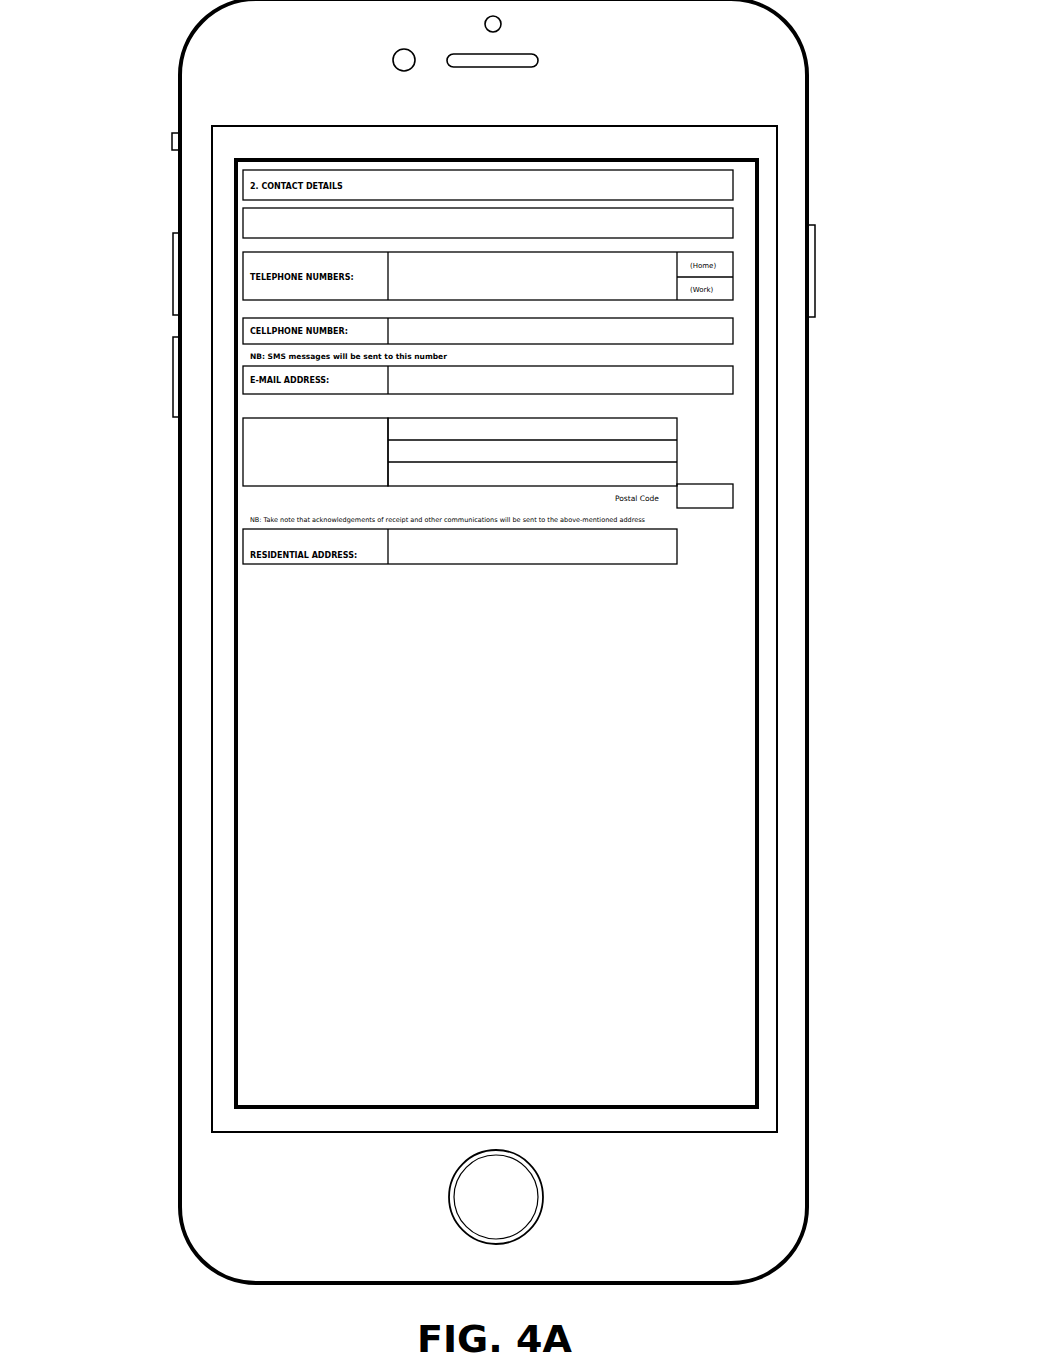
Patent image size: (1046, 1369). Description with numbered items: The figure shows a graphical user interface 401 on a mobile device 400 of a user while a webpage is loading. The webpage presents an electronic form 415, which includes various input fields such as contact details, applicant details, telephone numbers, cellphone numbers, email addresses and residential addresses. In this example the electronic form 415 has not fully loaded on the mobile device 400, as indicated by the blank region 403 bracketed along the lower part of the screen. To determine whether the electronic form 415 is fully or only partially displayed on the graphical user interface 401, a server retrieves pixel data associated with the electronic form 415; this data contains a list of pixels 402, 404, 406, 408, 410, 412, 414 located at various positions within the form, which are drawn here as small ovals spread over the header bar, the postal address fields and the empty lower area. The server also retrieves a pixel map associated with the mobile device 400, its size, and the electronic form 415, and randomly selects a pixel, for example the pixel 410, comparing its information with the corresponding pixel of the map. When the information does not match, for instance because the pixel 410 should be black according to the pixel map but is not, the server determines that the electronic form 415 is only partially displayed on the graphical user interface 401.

The mobile device 400 is at (213, 83).
The graphical user interface 401 is at (210, 193).
The electronic form 415 is at (757, 240).
The pixel 402 is at (488, 206).
The region 403 is at (757, 562).
The pixel 404 is at (312, 442).
The pixel 406 is at (532, 452).
The pixel 408 is at (617, 620).
The pixel 410 is at (293, 608).
The pixel 412 is at (350, 984).
The pixel 414 is at (632, 860).